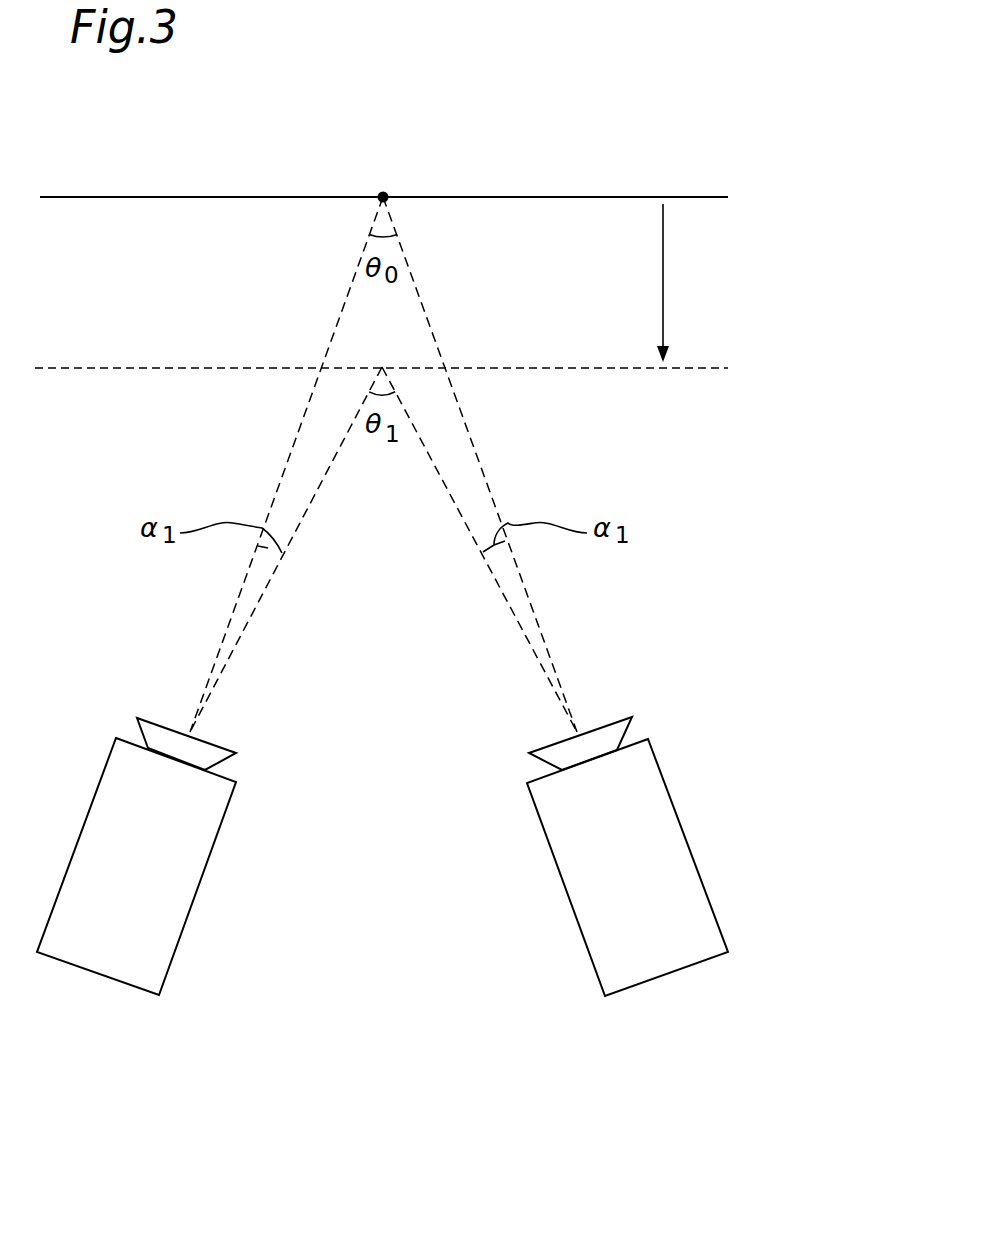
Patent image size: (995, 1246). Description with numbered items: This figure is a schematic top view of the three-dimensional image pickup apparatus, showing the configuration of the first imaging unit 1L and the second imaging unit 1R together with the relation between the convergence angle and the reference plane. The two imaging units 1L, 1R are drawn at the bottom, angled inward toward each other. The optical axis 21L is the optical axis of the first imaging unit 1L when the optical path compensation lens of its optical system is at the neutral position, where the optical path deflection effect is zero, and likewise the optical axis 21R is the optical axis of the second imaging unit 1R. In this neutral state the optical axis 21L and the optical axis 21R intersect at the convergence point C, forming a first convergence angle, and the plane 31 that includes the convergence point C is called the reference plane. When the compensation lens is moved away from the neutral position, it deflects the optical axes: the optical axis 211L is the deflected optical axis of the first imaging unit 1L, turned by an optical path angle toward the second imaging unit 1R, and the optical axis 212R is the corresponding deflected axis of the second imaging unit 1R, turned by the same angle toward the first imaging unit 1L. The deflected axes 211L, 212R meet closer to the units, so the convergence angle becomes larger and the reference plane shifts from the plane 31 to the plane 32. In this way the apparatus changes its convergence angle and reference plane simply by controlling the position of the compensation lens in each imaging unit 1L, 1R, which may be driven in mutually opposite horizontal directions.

The convergence point C is at (376, 187).
The plane 31 is at (707, 198).
The plane 32 is at (707, 369).
The optical axis 21L is at (272, 490).
The optical axis 21R is at (502, 500).
The optical axis 211L is at (278, 582).
The right imaging direction 212R is at (429, 462).
The first imaging unit 1L is at (93, 948).
The second imaging unit 1R is at (654, 963).